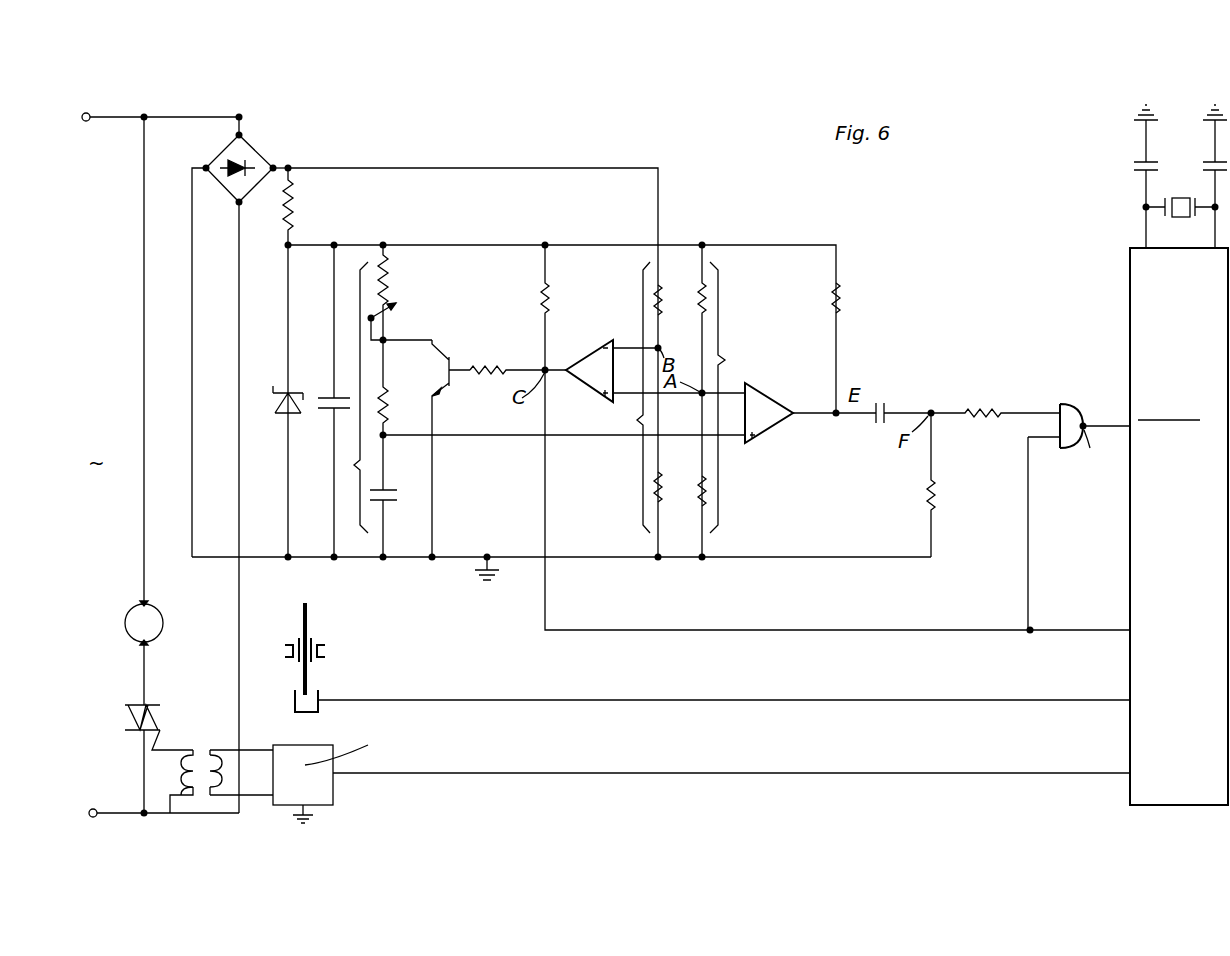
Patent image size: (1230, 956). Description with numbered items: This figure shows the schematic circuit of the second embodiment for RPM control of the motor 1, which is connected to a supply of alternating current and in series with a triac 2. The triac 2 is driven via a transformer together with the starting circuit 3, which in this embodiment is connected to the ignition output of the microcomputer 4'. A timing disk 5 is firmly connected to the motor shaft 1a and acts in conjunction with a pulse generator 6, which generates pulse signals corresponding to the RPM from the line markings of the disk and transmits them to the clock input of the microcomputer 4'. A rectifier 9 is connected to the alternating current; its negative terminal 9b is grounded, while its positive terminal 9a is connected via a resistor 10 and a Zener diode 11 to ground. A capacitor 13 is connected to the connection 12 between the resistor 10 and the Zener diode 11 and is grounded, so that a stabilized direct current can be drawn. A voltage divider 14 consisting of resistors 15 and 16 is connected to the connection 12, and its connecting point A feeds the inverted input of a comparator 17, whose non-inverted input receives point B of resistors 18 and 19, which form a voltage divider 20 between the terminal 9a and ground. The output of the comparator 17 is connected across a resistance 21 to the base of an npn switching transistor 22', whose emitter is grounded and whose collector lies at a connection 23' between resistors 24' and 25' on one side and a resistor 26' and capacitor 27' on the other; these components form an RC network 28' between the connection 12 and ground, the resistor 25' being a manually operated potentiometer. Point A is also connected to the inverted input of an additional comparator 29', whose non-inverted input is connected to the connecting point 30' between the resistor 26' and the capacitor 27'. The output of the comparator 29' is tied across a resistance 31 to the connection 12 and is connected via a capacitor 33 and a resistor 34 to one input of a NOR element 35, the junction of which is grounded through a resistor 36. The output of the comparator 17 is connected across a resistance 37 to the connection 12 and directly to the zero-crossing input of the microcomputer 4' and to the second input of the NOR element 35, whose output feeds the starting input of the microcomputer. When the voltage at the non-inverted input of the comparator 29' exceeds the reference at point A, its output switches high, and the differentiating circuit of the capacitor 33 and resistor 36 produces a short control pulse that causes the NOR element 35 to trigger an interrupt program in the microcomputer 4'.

The motor 1 is at (163, 623).
The motor shaft 1a is at (324, 645).
The triac 2 is at (162, 722).
The starting circuit 3 is at (334, 794).
The microcomputer 4' is at (1159, 455).
The timing disk 5 is at (308, 607).
The pulse generator 6 is at (295, 708).
The rectifier 9 is at (258, 148).
The positive terminal 9a is at (272, 175).
The negative terminal 9b is at (204, 174).
The resistor 10 is at (293, 208).
The Zener diode 11 is at (281, 415).
The connection 12 is at (285, 249).
The capacitor 13 is at (330, 398).
The voltage divider 14 is at (727, 356).
The resistor 15 is at (698, 288).
The resistor 16 is at (698, 494).
The comparator 17 is at (598, 360).
The resistor 18 is at (664, 306).
The resistor 19 is at (661, 500).
The voltage divider 20 is at (635, 424).
The resistance 21 is at (486, 366).
The npn switching transistor 22' is at (455, 442).
The connection 23' is at (406, 351).
The resistor 24' is at (403, 292).
The potentiometer resistor 25' is at (401, 321).
The resistor 26' is at (403, 387).
The capacitor 27' is at (397, 498).
The RC network 28' is at (332, 397).
The additional comparator 29' is at (771, 421).
The connecting point 30' is at (563, 431).
The resistance 31 is at (841, 300).
The capacitor 33 is at (886, 405).
The resistor 34 is at (980, 408).
The NOR element 35 is at (1070, 402).
The resistor 36 is at (936, 492).
The resistance 37 is at (548, 300).